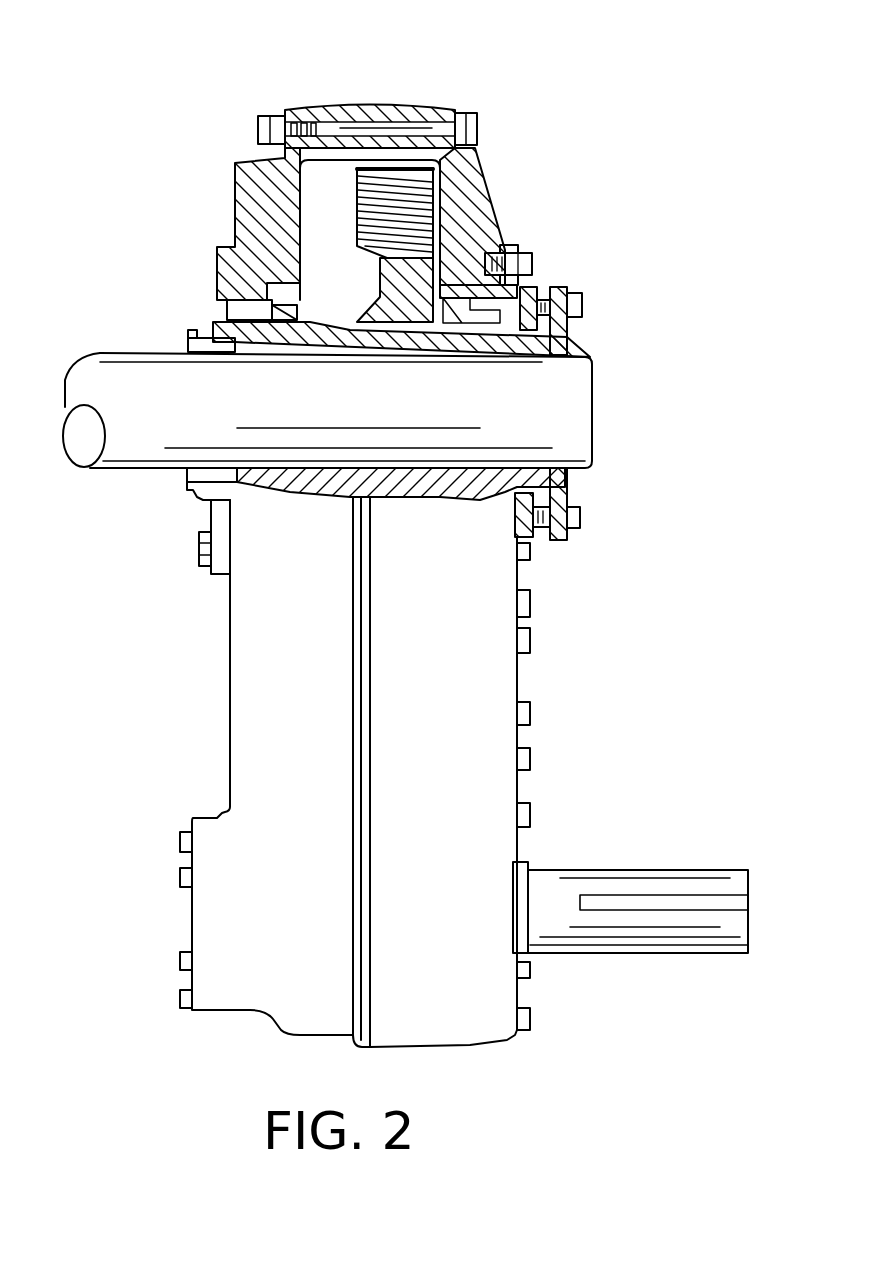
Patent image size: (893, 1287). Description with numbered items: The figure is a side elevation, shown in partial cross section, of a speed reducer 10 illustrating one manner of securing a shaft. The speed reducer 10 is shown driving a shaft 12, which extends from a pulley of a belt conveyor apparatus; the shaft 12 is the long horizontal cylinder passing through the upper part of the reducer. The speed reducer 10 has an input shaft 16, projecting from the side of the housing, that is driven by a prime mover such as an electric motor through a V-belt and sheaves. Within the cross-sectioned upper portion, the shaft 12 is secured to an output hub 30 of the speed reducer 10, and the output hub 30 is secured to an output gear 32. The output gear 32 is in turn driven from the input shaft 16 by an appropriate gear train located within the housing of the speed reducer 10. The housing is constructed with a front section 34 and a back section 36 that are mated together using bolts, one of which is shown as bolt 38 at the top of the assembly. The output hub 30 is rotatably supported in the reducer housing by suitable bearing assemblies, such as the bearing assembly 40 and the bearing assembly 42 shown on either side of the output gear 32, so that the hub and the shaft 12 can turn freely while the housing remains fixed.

The speed reducer 10 is at (643, 620).
The shaft 12 is at (93, 360).
The input shaft 16 is at (687, 884).
The output hub 30 is at (187, 332).
The output gear 32 is at (357, 217).
The front section 34 is at (490, 734).
The back section 36 is at (257, 622).
The bolt 38 is at (412, 128).
The bearing assembly 40 is at (287, 303).
The bearing assembly 42 is at (483, 232).